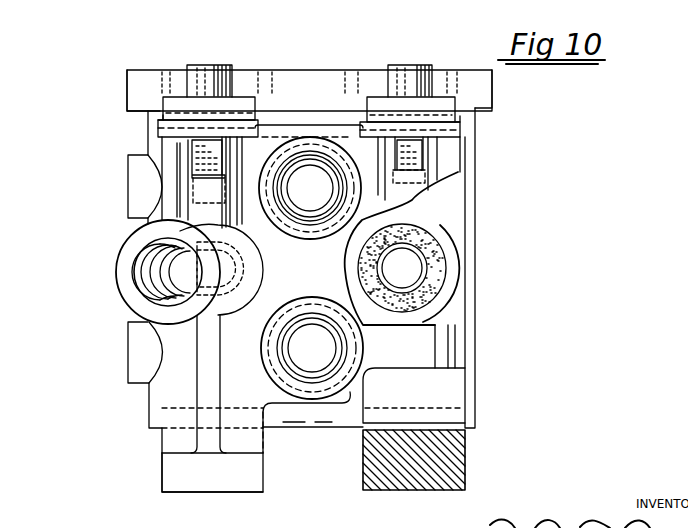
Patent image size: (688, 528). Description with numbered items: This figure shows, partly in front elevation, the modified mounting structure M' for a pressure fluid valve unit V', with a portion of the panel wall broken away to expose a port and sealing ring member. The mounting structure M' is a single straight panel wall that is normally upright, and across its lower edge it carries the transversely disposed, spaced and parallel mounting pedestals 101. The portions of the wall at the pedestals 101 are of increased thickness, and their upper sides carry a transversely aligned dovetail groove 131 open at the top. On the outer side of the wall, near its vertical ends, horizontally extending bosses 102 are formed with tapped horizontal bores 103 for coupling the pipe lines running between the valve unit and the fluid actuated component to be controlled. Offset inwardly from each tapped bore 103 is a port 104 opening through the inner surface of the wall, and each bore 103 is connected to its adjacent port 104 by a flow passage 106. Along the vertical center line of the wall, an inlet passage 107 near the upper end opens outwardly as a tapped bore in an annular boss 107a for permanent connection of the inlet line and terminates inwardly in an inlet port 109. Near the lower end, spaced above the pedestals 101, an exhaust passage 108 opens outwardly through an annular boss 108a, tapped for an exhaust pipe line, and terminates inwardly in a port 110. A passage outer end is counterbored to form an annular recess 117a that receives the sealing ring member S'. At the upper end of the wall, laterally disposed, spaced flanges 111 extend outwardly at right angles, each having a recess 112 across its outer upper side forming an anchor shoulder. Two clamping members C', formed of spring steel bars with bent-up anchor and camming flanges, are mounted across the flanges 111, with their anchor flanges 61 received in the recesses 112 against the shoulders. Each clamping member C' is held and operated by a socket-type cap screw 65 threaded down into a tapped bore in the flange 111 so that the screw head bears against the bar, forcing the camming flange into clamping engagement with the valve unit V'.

The valve unit V' is at (309, 64).
The cap screw 65 is at (198, 72).
The clamping member C' is at (317, 75).
The anchor flange 61 is at (157, 97).
The recess 112 is at (163, 120).
The flange 111 is at (165, 128).
The inlet passage 107 is at (308, 172).
The annular boss 107a is at (293, 133).
The inlet port 109 is at (325, 186).
The flow passage 106 is at (200, 242).
The boss 102 is at (120, 281).
The tapped bore 103 is at (158, 283).
The port 104 is at (243, 263).
The exhaust passage 108 is at (310, 348).
The port 110 is at (331, 350).
The annular boss 108a is at (280, 372).
The annular recess 117a is at (449, 253).
The sealing ring member S' is at (449, 269).
The mounting pedestal 101 is at (373, 467).
The dovetail groove 131 is at (454, 428).
The mounting structure M' is at (286, 300).